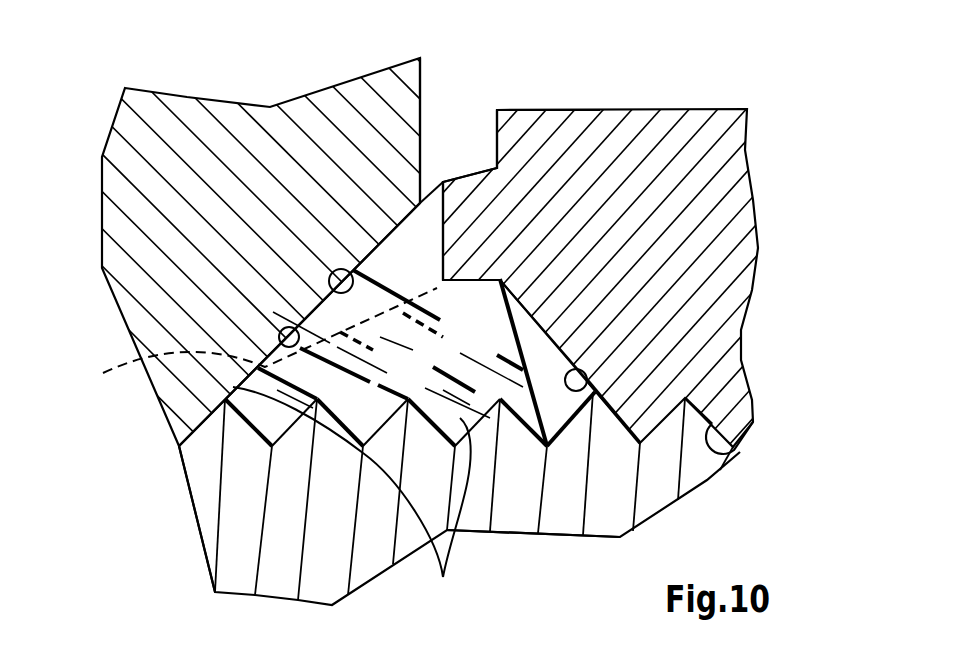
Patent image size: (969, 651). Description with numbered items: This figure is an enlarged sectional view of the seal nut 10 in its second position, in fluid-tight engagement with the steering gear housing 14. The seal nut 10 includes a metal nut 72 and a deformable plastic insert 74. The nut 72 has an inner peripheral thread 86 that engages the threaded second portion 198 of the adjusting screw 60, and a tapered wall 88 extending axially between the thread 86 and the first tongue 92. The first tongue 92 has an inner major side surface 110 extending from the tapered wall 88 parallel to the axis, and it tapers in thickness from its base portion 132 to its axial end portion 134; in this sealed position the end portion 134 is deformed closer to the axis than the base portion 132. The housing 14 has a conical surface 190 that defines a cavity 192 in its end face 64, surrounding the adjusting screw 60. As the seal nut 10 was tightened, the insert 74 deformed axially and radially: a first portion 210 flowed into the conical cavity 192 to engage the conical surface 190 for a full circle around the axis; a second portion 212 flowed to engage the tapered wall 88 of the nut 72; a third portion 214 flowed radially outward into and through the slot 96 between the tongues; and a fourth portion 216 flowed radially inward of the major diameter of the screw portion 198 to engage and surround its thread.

The seal nut 10 is at (774, 133).
The steering gear housing 14 is at (178, 92).
The adjusting screw 60 is at (708, 481).
The end face 64 is at (422, 84).
The nut 72 is at (675, 108).
The deformable insert 74 is at (530, 342).
The inner peripheral thread 86 is at (746, 453).
The tapered wall 88 is at (586, 385).
The first tongue 92 is at (401, 220).
The slot 96 is at (433, 255).
The inner major side surface 110 is at (386, 379).
The base portion 132 is at (520, 344).
The axial end portion 134 is at (246, 337).
The conical surface 190 is at (282, 340).
The cavity 192 is at (330, 273).
The threaded second portion 198 is at (628, 536).
The first portion 210 is at (233, 387).
The second portion 212 is at (542, 408).
The third portion 214 is at (443, 182).
The fourth portion 216 is at (352, 501).